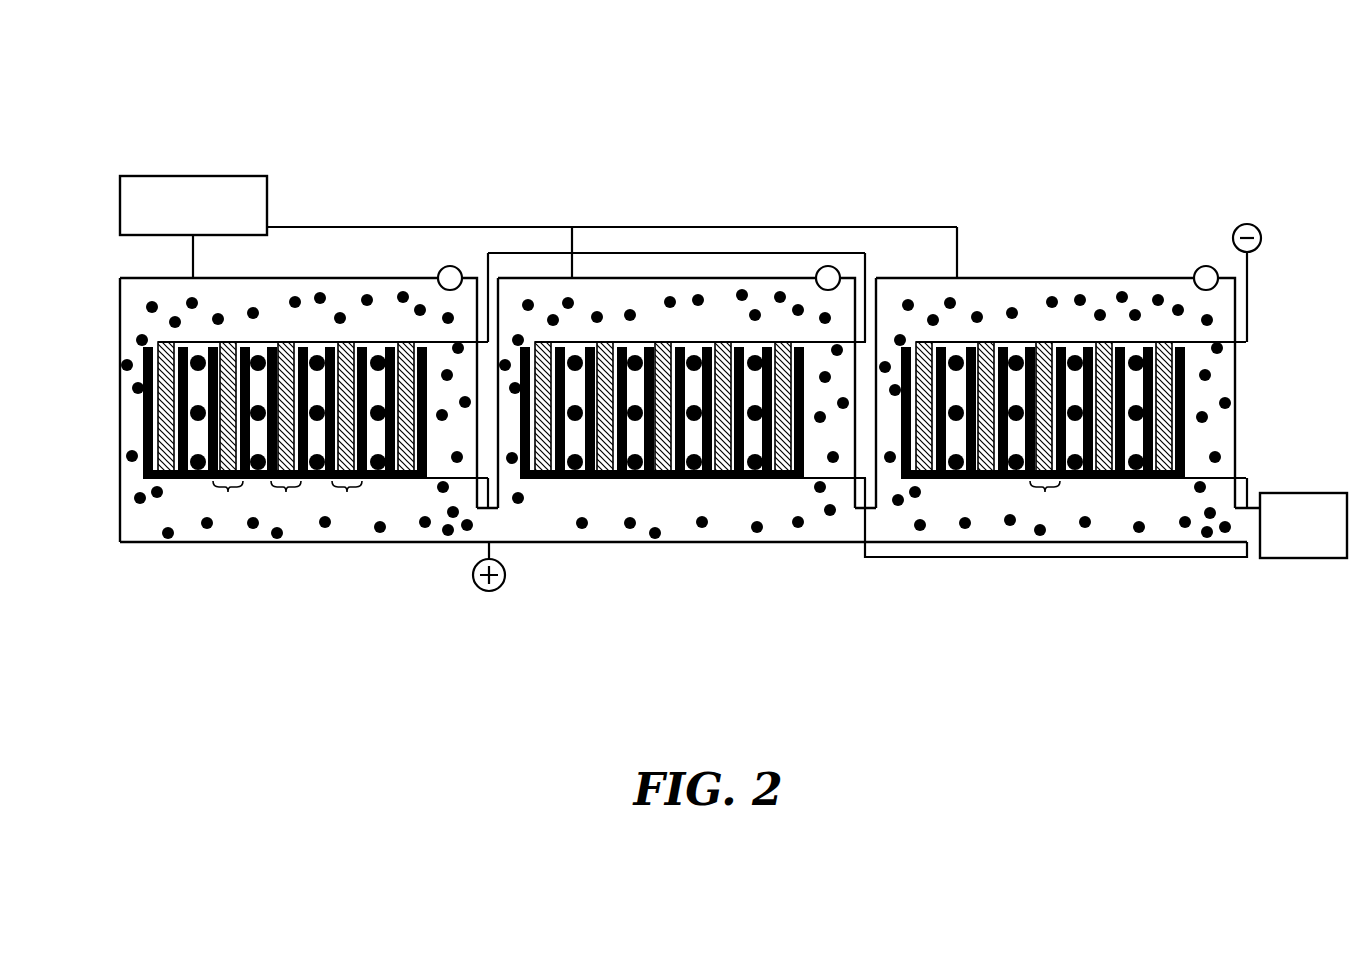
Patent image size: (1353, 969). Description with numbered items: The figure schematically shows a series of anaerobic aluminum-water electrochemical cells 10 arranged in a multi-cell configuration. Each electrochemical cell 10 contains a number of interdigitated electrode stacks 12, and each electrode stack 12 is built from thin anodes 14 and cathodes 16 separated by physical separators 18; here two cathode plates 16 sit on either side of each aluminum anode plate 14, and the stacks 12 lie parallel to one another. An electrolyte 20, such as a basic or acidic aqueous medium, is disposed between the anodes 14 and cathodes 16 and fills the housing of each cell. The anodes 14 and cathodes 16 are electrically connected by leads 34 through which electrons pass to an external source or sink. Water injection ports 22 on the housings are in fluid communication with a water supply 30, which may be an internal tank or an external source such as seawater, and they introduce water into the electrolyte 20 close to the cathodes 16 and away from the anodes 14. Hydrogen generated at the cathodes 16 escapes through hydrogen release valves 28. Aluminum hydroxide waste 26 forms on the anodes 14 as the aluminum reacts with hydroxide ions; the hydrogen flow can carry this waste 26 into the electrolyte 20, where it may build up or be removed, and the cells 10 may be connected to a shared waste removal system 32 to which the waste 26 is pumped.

The anaerobic aluminum-water electrochemical cell 10 is at (350, 270).
The interdigitated electrode stack 12 is at (286, 493).
The anode 14 is at (168, 472).
The cathode 16 is at (147, 482).
The physical separator 18 is at (315, 343).
The electrolyte 20 is at (130, 311).
The water injection port 22 is at (192, 276).
The aluminum hydroxide waste 26 is at (138, 392).
The hydrogen release valve 28 is at (450, 266).
The water supply 30 is at (177, 223).
The shared waste removal system 32 is at (1287, 543).
The lead 34 is at (489, 592).